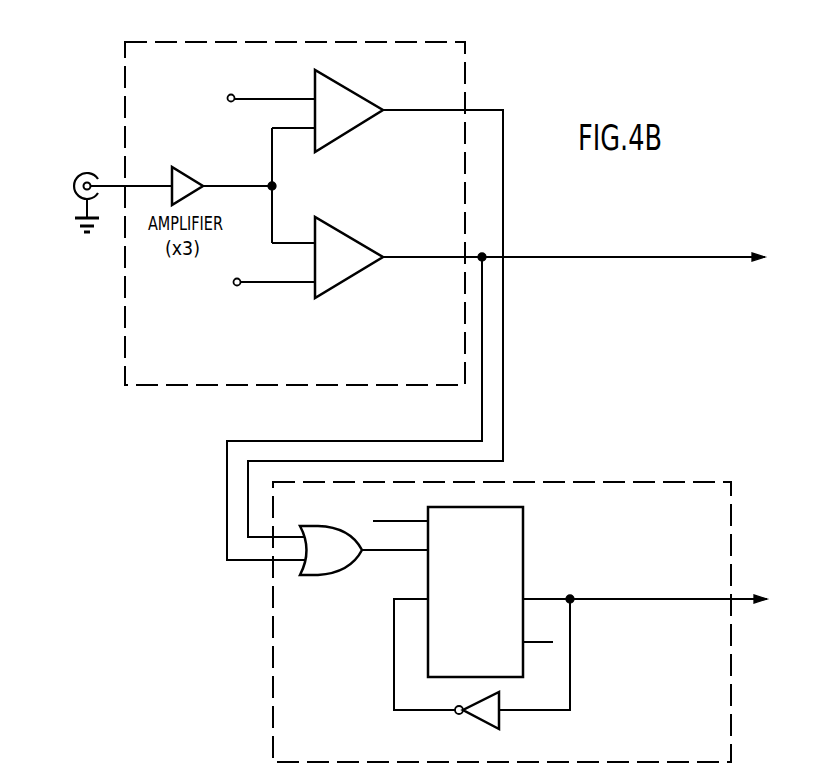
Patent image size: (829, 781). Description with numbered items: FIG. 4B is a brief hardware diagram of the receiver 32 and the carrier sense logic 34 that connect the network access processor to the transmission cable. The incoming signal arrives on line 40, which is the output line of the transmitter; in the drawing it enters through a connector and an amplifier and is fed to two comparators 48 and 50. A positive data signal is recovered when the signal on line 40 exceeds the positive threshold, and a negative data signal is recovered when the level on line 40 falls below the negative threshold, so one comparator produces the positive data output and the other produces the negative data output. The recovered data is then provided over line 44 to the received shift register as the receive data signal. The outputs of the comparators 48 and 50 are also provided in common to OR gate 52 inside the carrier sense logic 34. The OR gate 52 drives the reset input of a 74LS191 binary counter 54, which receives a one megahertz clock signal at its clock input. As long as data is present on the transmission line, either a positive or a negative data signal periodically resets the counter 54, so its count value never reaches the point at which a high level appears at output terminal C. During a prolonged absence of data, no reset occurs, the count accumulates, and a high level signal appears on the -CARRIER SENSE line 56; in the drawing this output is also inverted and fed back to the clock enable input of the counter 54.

The receiver 32 is at (413, 42).
The carrier sense logic 34 is at (637, 481).
The output line 40 is at (110, 185).
The line 44 is at (593, 256).
The comparator 48 is at (349, 88).
The comparator 50 is at (365, 245).
The OR gate 52 is at (322, 525).
The counter 54 is at (523, 522).
The -CARRIER SENSE line 56 is at (675, 602).